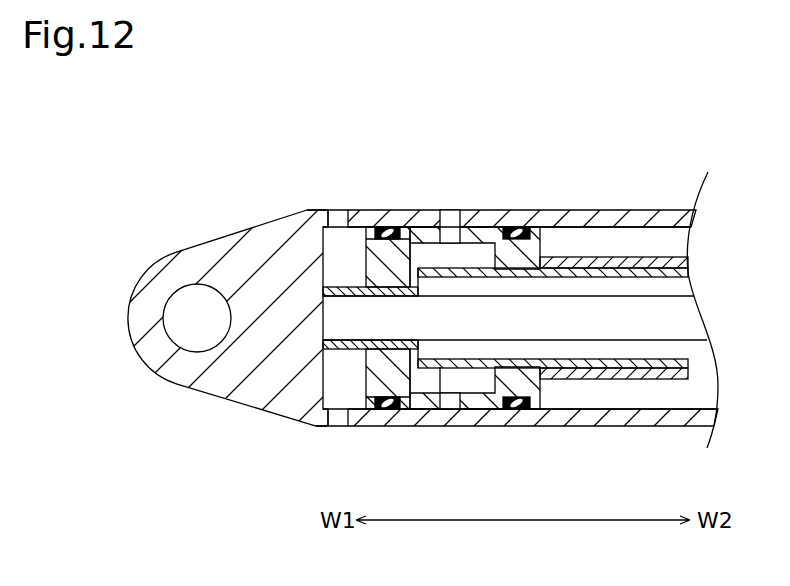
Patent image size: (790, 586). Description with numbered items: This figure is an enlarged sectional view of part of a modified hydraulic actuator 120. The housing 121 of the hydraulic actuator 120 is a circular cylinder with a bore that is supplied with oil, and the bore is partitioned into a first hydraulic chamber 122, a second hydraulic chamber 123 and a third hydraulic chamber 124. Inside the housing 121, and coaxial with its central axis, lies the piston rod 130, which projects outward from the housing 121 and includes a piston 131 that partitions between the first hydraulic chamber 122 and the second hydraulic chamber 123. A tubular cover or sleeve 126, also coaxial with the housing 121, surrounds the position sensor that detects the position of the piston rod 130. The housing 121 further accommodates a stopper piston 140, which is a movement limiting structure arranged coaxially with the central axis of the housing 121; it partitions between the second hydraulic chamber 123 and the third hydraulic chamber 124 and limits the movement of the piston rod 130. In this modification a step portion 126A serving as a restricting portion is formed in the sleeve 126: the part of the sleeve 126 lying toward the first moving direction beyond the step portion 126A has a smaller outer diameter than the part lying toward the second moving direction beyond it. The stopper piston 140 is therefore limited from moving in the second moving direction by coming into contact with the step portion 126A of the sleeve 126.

The hydraulic actuator 120 is at (126, 178).
The housing 121 is at (641, 210).
The first hydraulic chamber 122 is at (672, 404).
The second hydraulic chamber 123 is at (472, 388).
The third hydraulic chamber 124 is at (322, 388).
The sleeve 126 is at (665, 279).
The step portion 126A is at (420, 290).
The piston rod 130 is at (678, 249).
The piston 131 is at (533, 402).
The stopper piston 140 is at (366, 387).